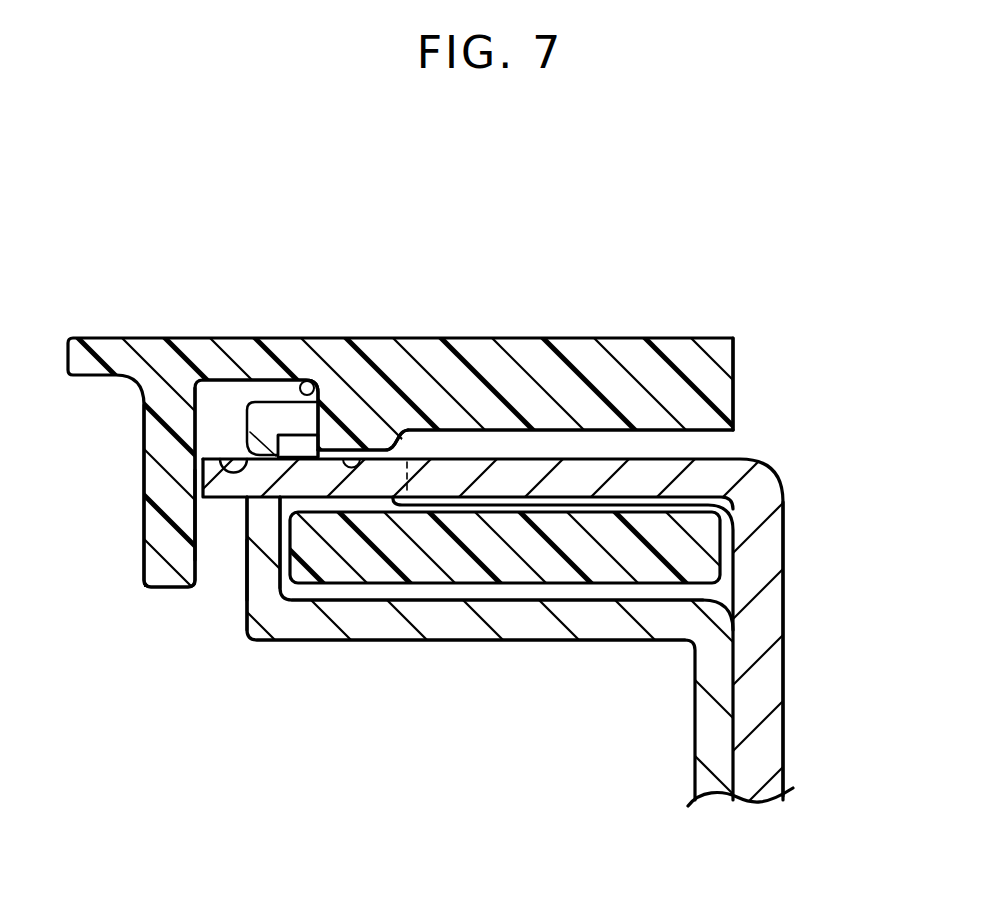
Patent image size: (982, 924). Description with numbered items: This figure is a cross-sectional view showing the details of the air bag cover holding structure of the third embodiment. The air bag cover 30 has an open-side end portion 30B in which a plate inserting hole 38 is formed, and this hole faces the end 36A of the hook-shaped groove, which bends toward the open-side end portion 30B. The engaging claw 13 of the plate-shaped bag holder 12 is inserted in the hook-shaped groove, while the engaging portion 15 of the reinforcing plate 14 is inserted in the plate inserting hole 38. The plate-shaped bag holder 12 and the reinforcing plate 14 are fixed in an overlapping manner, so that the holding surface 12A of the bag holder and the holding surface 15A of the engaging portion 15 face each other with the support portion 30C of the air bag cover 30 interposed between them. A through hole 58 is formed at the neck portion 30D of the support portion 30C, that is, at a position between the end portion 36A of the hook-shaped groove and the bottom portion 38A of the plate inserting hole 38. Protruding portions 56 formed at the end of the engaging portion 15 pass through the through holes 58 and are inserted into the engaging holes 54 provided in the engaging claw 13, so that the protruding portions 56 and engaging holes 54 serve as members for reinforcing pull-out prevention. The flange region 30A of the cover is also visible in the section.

The air bag cover 30 is at (151, 338).
The flange of upper frame plate 30A is at (178, 590).
The open-side end portion 30B is at (735, 383).
The support portion 30C is at (445, 548).
The neck portion 30D is at (281, 604).
The end of the hook-shaped groove 36A is at (305, 381).
The plate inserting hole 38 is at (714, 431).
The bottom portion of the plate inserting hole 38A is at (448, 428).
The through hole 58 is at (363, 457).
The engaging hole 54 is at (208, 456).
The protruding portion 56 is at (205, 494).
The engaging portion 15 is at (640, 458).
The holding surface 15A is at (680, 504).
The reinforcing plate 14 is at (783, 690).
The plate-shaped bag holder 12 is at (695, 747).
The holding surface 12A is at (514, 582).
The engaging claw 13 is at (235, 560).